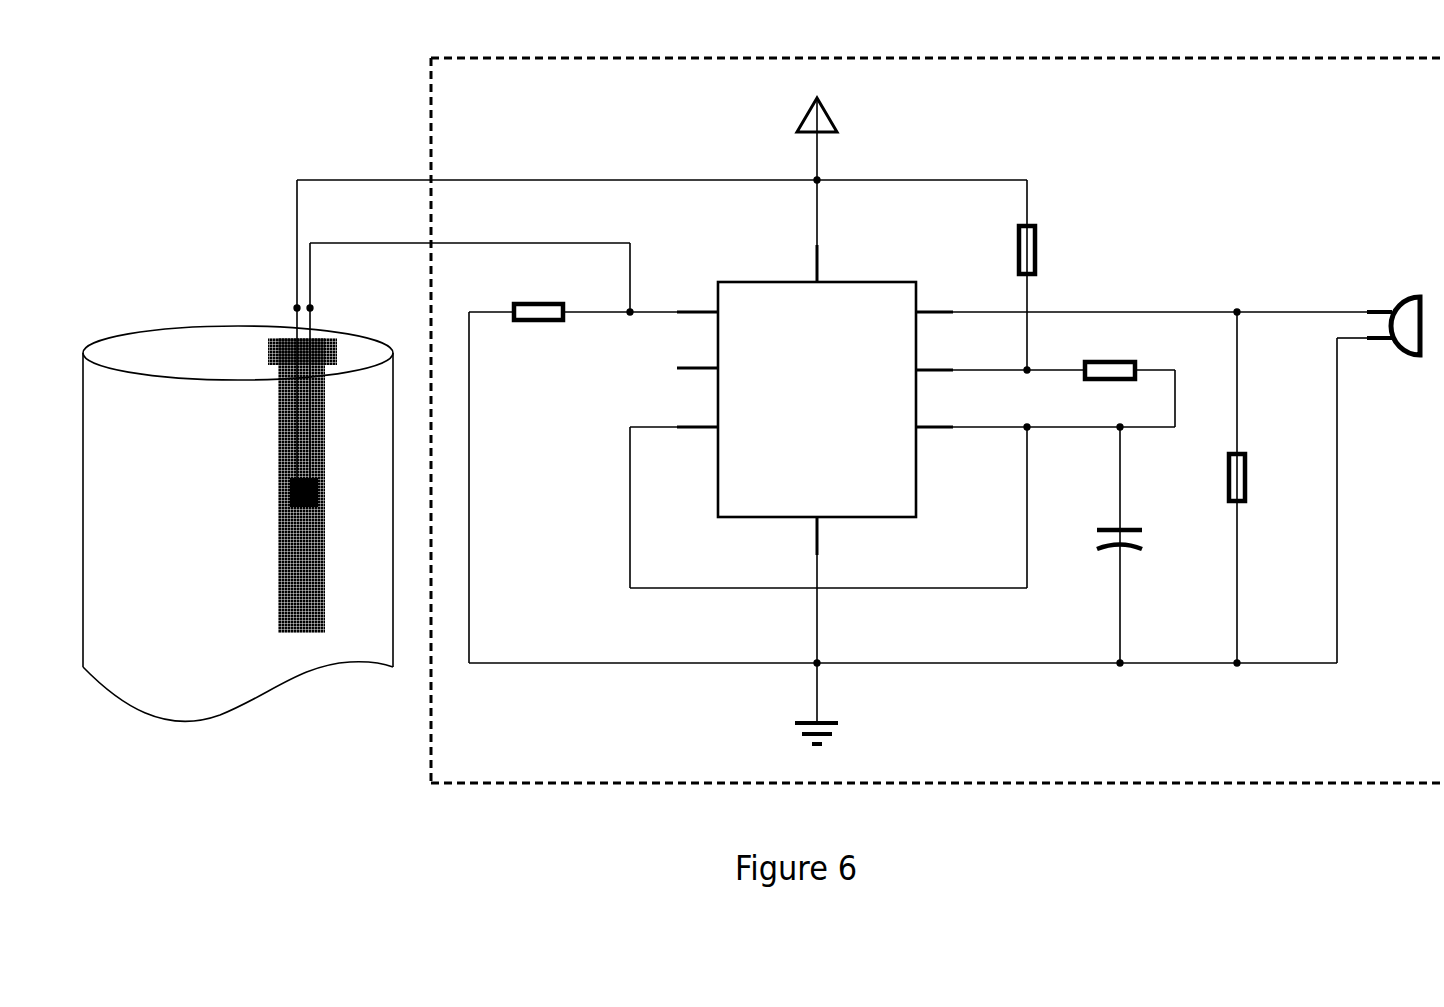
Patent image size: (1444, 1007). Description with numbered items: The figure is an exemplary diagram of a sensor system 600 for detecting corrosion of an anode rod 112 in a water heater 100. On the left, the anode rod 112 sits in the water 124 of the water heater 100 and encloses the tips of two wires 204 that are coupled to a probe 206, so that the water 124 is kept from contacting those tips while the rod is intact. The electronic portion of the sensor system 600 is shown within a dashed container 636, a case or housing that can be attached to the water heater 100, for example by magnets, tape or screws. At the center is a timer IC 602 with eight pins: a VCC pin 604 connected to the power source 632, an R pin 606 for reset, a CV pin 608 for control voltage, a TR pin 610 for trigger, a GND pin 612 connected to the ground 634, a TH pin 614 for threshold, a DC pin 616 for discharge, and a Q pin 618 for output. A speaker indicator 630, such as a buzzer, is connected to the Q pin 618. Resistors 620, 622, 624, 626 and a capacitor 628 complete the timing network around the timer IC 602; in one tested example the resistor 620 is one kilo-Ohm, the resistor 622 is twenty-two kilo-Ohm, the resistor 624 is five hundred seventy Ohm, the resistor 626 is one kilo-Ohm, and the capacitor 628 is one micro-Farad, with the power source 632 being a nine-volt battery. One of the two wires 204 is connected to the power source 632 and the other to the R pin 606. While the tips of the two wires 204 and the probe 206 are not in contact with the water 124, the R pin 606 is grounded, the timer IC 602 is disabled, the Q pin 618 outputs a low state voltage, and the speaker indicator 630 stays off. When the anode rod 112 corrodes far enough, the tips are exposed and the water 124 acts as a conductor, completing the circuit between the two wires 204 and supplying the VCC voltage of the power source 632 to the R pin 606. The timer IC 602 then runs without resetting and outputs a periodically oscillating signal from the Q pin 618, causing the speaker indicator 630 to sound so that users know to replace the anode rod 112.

The sensor system 600 is at (295, 88).
The water heater 100 is at (263, 695).
The water 124 is at (179, 668).
The anode rod 112 is at (278, 590).
The probe 206 is at (290, 496).
The two wires 204 is at (281, 297).
The container 636 is at (937, 420).
The 555 timer IC 602 is at (817, 399).
The VCC pin 604 is at (842, 263).
The R pin 606 is at (692, 296).
The CV pin 608 is at (692, 352).
The TR pin 610 is at (692, 411).
The GND pin 612 is at (842, 536).
The TH pin 614 is at (941, 411).
The DC pin 616 is at (941, 353).
The Q pin 618 is at (941, 296).
The resistor 620 is at (538, 326).
The resistor 622 is at (1044, 250).
The resistor 624 is at (1110, 357).
The resistor 626 is at (1254, 477).
The capacitor 628 is at (1136, 541).
The speaker indicator 630 is at (1398, 340).
The power source 632 is at (856, 108).
The ground 634 is at (856, 731).